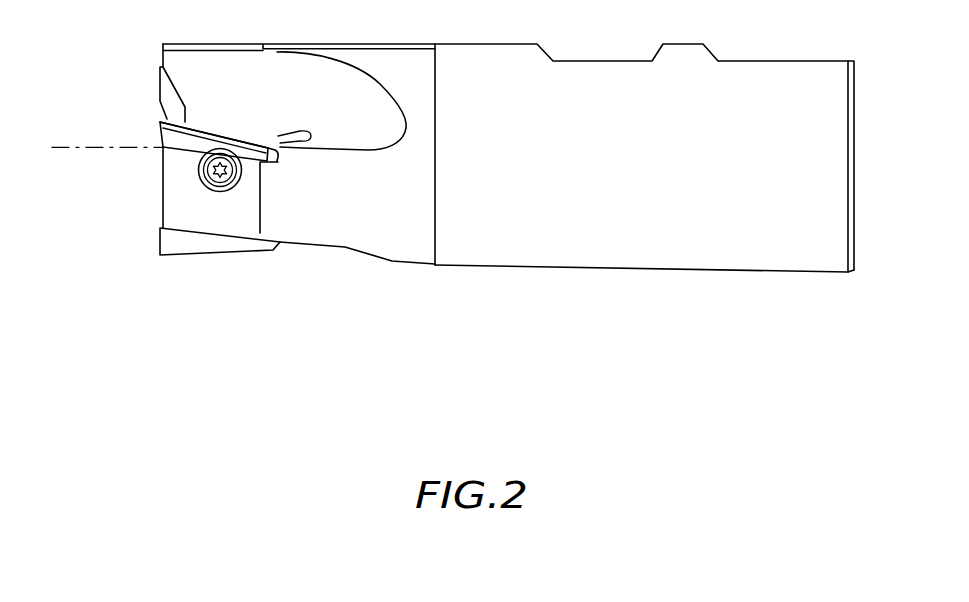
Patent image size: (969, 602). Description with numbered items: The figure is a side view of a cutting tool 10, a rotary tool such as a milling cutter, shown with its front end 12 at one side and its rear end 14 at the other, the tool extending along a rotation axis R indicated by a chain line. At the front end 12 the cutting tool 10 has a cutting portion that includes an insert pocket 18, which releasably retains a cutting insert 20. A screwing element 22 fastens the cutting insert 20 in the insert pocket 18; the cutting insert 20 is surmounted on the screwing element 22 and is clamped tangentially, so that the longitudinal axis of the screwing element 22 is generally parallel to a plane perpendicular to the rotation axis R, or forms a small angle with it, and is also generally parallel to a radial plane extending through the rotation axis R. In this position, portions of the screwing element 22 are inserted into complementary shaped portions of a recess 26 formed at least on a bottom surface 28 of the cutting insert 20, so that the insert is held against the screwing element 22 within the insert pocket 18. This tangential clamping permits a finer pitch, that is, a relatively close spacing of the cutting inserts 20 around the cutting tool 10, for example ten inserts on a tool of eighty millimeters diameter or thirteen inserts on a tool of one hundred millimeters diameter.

The cutting tool 10 is at (688, 338).
The front end 12 is at (162, 294).
The rear end 14 is at (848, 311).
The insert pocket 18 is at (200, 156).
The cutting insert 20 is at (165, 114).
The screwing element 22 is at (226, 176).
The recess 26 is at (223, 145).
The bottom surface 28 is at (263, 164).
The rotation axis R is at (96, 147).